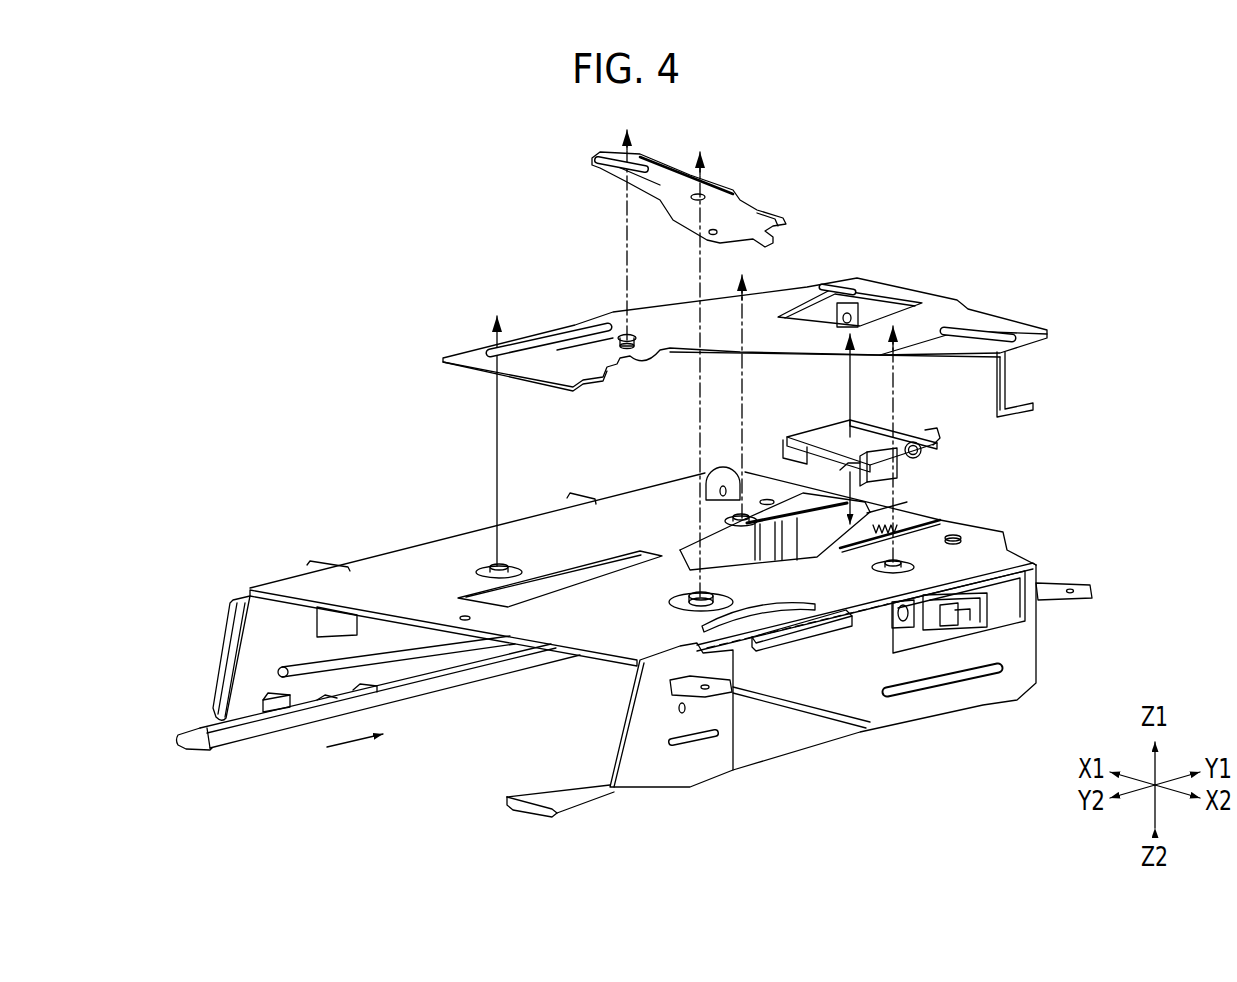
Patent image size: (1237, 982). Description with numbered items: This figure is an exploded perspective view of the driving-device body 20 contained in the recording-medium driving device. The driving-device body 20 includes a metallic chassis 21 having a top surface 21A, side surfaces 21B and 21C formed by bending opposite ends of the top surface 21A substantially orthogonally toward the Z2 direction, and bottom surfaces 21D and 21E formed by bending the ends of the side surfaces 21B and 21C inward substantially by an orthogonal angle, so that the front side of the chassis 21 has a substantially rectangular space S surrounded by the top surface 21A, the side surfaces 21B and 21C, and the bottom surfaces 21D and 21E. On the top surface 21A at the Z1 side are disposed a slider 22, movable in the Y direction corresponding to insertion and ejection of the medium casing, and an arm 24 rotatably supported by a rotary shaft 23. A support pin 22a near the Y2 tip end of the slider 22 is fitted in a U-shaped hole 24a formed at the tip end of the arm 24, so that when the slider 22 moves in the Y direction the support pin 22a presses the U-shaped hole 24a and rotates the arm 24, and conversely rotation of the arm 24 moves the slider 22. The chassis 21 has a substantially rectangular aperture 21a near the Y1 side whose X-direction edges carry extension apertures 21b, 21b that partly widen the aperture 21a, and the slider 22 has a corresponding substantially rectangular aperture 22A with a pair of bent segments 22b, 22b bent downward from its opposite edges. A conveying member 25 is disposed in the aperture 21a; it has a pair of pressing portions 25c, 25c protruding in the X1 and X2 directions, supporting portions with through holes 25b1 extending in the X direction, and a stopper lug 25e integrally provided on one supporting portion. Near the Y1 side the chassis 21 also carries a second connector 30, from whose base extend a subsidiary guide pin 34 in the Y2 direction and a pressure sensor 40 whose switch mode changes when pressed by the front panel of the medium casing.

The driving-device body 20 is at (326, 297).
The chassis 21 is at (626, 656).
The top surface 21A is at (380, 580).
The side surface 21B is at (643, 772).
The side surface 21C is at (260, 648).
The bottom surface 21D is at (227, 727).
The bottom surface 21E is at (553, 797).
The aperture 21a is at (808, 532).
The extension aperture 21b is at (695, 540).
The slider 22 is at (745, 320).
The aperture 22A is at (880, 310).
The support pin 22a is at (617, 340).
The bent segment 22b is at (843, 310).
The rotary shaft 23 is at (680, 592).
The arm 24 is at (674, 183).
The U-shaped hole 24a is at (615, 164).
The conveying member 25 is at (889, 455).
The through hole 25b1 is at (937, 468).
The pressing portion 25c is at (783, 443).
The stopper lug 25e is at (933, 433).
The second connector 30 is at (995, 605).
The subsidiary guide pin 34 is at (903, 614).
The pressure sensor 40 is at (950, 618).
The space S is at (393, 750).